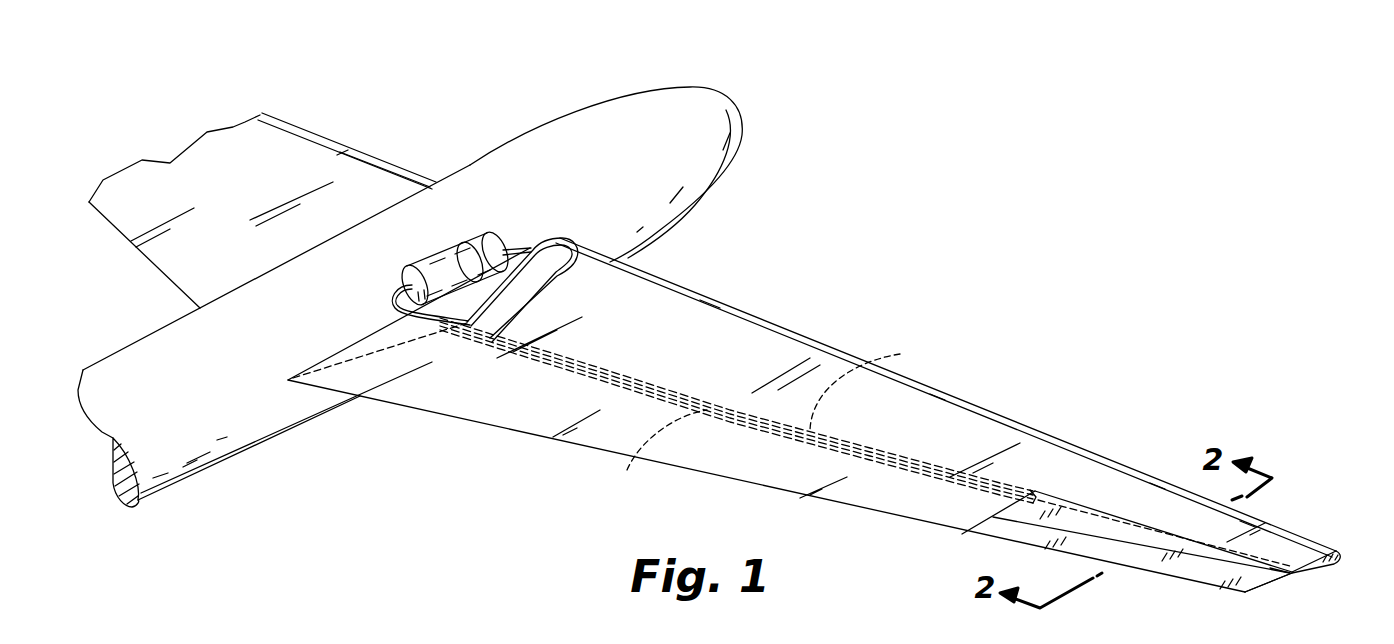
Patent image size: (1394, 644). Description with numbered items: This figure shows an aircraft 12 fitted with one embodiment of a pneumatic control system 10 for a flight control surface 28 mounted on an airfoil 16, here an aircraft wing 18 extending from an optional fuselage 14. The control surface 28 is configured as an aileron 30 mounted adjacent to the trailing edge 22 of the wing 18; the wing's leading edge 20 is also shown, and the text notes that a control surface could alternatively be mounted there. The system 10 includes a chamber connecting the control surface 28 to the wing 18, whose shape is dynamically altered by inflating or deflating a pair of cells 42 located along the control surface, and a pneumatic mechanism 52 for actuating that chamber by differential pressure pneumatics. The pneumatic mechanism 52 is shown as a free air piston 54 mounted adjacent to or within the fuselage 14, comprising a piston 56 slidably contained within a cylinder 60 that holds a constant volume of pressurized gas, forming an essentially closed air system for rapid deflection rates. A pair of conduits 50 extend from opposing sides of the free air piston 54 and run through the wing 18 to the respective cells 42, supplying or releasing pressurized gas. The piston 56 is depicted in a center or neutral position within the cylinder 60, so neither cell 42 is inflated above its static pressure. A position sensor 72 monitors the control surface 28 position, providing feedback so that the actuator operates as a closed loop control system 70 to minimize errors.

The pneumatic control system 10 is at (829, 306).
The aircraft 12 is at (777, 126).
The fuselage 14 is at (527, 131).
The airfoil 16 is at (797, 318).
The aircraft wing 18 is at (303, 148).
The leading edge 20 is at (1338, 548).
The trailing edge 22 is at (1237, 597).
The control surface 28 is at (1172, 564).
The aileron 30 is at (1172, 564).
The cell 42 is at (1270, 568).
The conduit 50 is at (767, 418).
The pneumatic mechanism 52 is at (388, 258).
The free air piston 54 is at (388, 258).
The piston 56 is at (466, 262).
The cylinder 60 is at (379, 283).
The closed loop control system 70 is at (786, 337).
The position sensor 72 is at (486, 245).